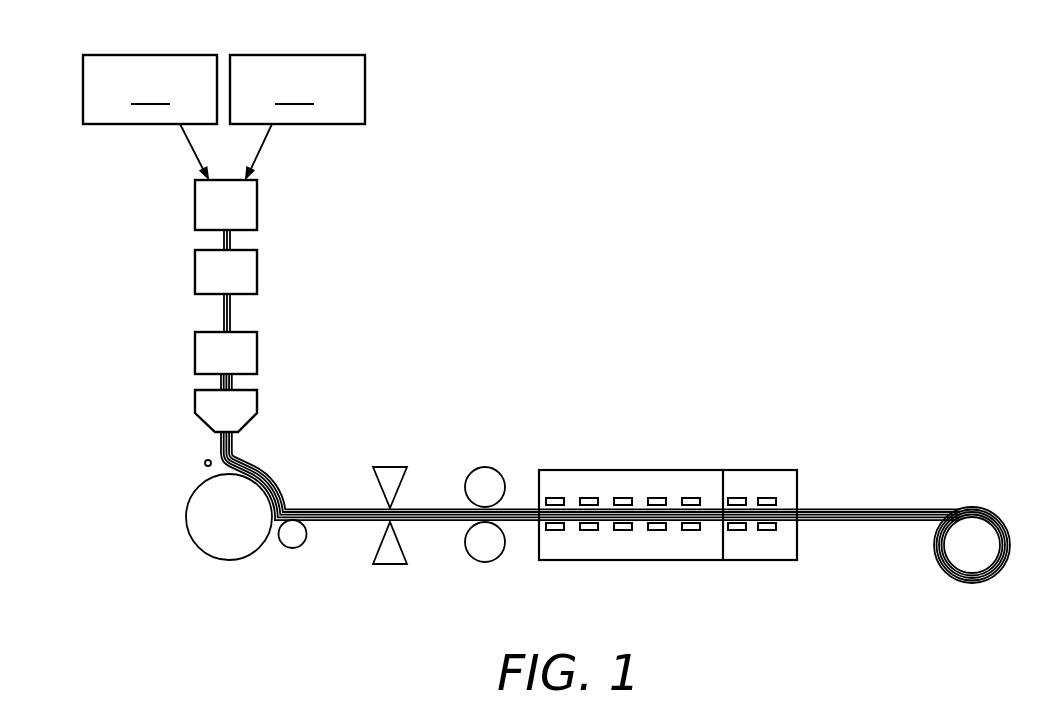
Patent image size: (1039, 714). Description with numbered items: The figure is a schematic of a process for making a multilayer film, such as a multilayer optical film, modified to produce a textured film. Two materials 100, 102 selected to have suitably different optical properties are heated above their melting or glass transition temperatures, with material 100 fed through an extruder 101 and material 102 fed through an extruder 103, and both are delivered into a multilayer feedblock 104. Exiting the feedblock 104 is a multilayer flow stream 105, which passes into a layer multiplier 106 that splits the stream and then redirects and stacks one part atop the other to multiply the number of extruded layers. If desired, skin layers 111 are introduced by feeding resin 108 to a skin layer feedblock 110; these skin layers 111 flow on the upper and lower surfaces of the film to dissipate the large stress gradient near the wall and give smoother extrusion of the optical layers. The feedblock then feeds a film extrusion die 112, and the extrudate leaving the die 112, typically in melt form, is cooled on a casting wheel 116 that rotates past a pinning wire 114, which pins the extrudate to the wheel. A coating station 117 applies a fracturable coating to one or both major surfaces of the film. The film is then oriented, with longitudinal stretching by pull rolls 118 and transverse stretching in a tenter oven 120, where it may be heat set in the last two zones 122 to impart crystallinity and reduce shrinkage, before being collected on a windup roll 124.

The material 100 is at (138, 55).
The extruder 101 is at (150, 90).
The material 102 is at (303, 55).
The extruder 103 is at (294, 90).
The multilayer feedblock 104 is at (232, 206).
The multilayer flow stream 105 is at (233, 240).
The layer multiplier 106 is at (243, 267).
The resin 108 is at (192, 351).
The skin layer feedblock 110 is at (243, 350).
The skin layers 111 is at (233, 386).
The film extrusion die 112 is at (240, 410).
The pinning wire 114 is at (205, 463).
The casting wheel 116 is at (268, 479).
The coating station 117 is at (391, 466).
The pull rolls 118 is at (485, 482).
The tenter oven 120 is at (797, 463).
The last two zones 122 is at (797, 565).
The windup roll 124 is at (970, 525).